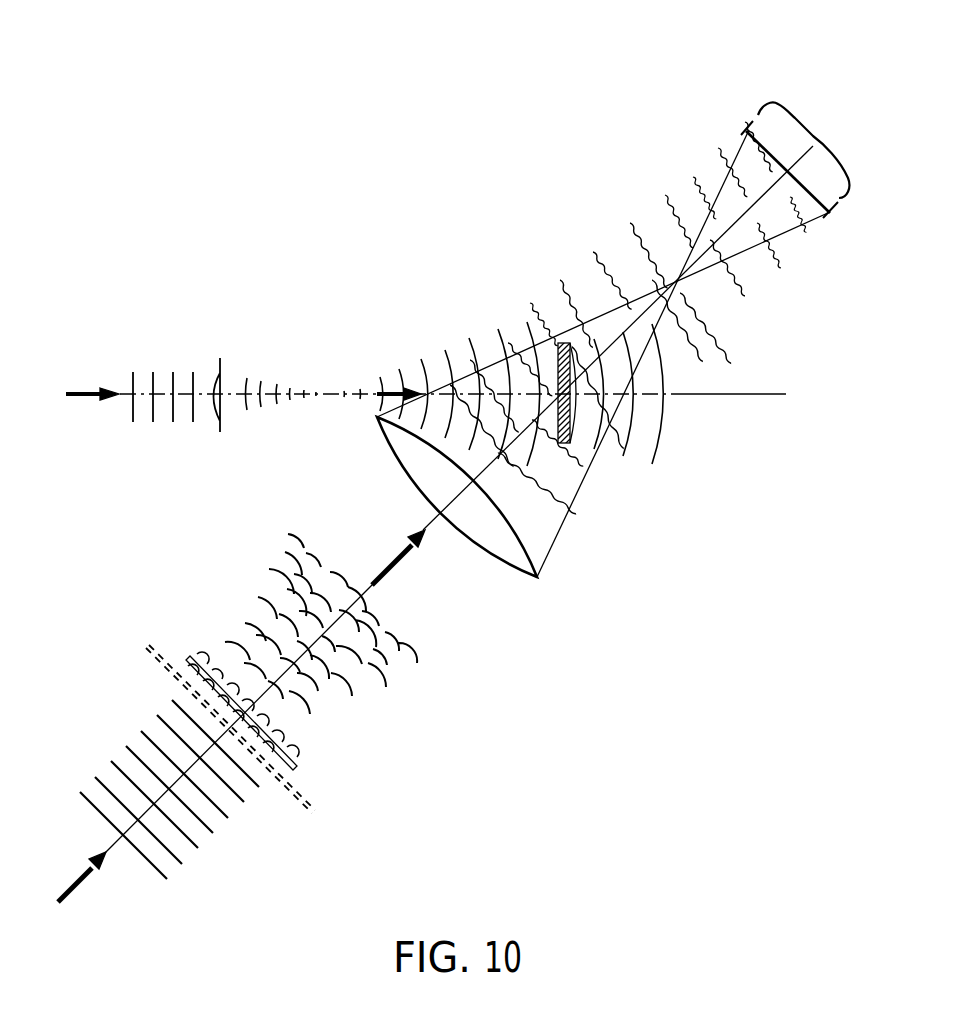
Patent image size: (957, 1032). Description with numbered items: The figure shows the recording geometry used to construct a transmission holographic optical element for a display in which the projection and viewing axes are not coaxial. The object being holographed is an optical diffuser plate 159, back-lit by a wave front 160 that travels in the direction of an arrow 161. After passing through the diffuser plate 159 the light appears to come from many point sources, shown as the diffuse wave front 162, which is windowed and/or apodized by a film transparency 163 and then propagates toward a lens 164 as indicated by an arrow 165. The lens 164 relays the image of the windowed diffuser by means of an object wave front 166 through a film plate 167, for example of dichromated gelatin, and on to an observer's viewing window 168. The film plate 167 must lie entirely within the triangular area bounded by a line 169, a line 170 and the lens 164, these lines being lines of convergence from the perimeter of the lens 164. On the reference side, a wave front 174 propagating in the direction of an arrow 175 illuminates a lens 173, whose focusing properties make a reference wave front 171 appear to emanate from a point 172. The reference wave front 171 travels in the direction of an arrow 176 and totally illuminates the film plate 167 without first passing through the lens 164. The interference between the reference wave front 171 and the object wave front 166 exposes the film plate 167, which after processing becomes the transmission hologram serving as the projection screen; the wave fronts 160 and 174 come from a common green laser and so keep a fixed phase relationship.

The optical diffuser plate 159 is at (313, 818).
The wave front 160 is at (193, 848).
The arrow 161 is at (86, 887).
The diffuse wave front 162 is at (363, 660).
The film transparency 163 is at (303, 761).
The lens 164 is at (521, 577).
The arrow 165 is at (412, 565).
The object wave front 166 is at (552, 498).
The film plate 167 is at (574, 446).
The observer's viewing window 168 is at (790, 110).
The line 169 is at (601, 306).
The line 170 is at (669, 314).
The reference wave front 171 is at (455, 376).
The point 172 is at (326, 394).
The lens 173 is at (213, 414).
The wave front 174 is at (172, 413).
The arrow 175 is at (96, 402).
The arrow 176 is at (392, 390).